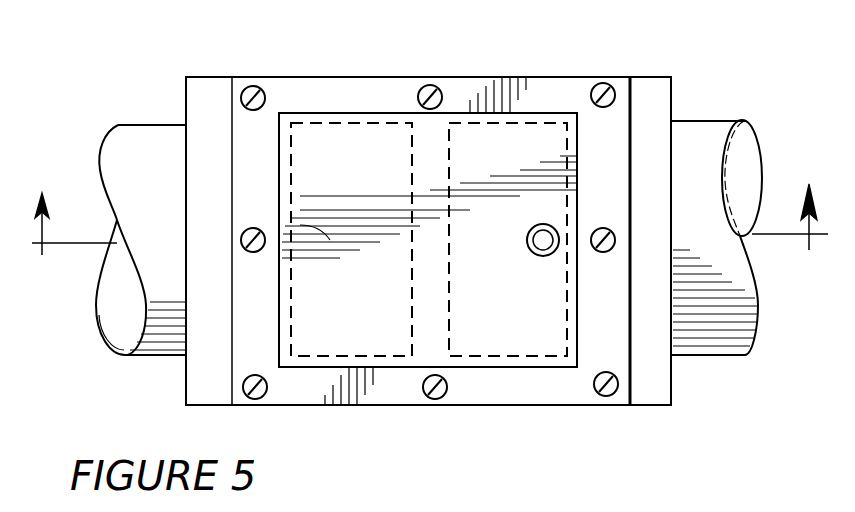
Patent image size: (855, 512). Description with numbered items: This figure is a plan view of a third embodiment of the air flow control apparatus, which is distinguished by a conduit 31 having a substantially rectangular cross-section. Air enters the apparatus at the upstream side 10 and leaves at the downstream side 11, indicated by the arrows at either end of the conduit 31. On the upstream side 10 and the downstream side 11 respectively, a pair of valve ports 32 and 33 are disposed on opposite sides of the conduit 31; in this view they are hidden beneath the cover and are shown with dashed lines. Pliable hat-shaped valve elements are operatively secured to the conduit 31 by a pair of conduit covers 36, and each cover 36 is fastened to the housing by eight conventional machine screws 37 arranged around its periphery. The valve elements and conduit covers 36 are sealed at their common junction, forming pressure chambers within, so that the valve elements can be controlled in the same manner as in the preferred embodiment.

The upstream side 10 is at (117, 318).
The downstream side 11 is at (742, 153).
The conduit 31 is at (660, 375).
The upstream side valve port 32 is at (378, 357).
The downstream side valve port 33 is at (540, 357).
The conduit cover 36 is at (519, 130).
The machine screw 37 is at (603, 85).